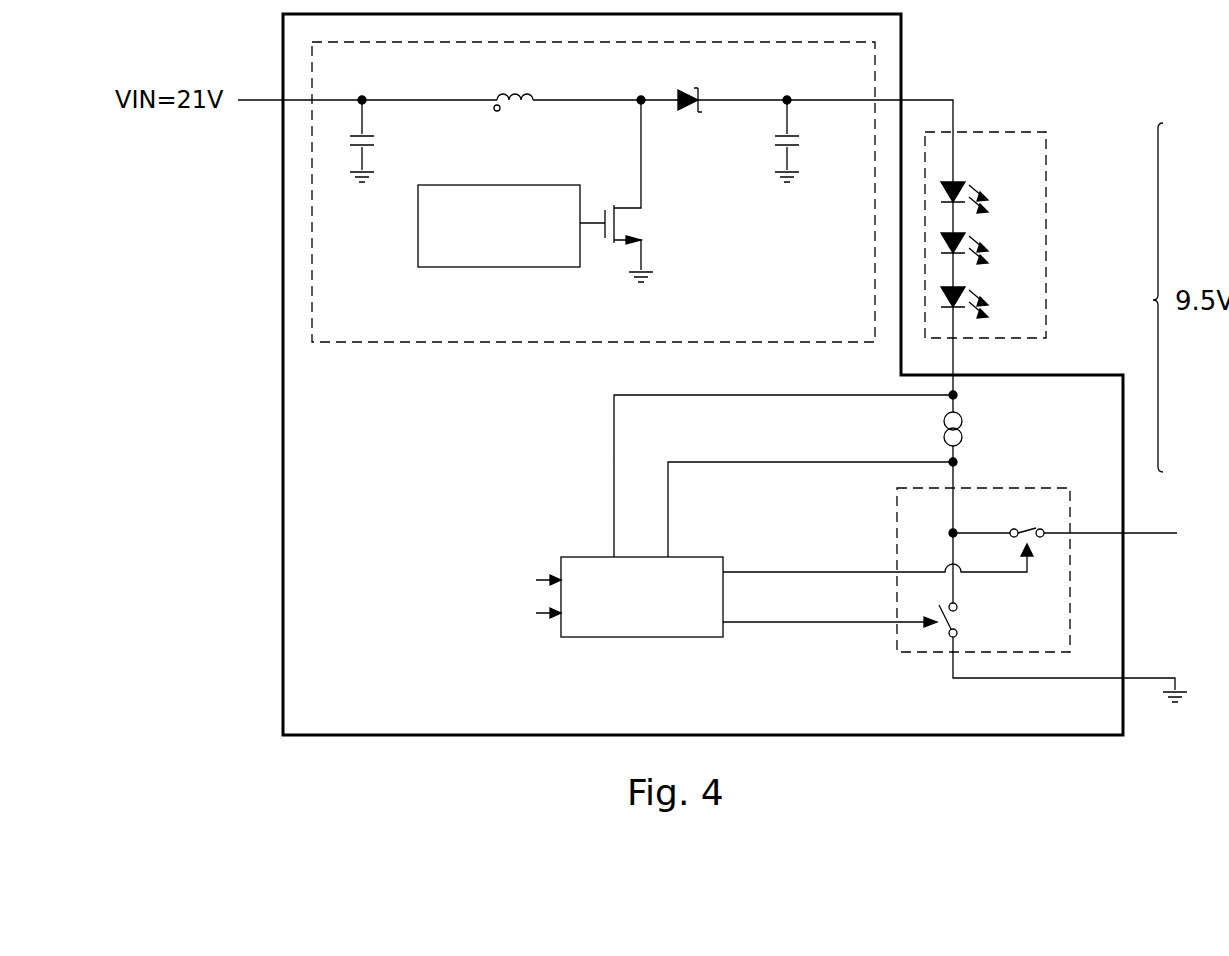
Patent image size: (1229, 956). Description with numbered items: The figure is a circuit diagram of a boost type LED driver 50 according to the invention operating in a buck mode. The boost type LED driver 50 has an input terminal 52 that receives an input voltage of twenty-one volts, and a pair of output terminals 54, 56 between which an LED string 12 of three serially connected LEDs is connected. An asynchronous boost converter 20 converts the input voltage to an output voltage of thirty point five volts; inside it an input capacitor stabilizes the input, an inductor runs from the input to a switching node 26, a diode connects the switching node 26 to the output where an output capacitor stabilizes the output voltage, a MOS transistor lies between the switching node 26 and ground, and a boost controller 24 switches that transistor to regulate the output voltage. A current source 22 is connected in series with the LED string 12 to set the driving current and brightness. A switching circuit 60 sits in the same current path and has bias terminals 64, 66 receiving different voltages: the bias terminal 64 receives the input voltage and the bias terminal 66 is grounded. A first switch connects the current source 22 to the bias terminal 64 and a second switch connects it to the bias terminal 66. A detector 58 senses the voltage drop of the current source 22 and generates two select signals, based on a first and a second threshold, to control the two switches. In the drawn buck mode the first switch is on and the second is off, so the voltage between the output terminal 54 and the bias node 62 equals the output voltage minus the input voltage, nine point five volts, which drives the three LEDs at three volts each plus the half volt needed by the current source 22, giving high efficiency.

The LED string 12 is at (985, 130).
The asynchronous boost converter 20 is at (606, 224).
The current source 22 is at (943, 430).
The boost controller 24 is at (497, 268).
The switching node 26 is at (635, 102).
The boost type LED driver 50 is at (283, 265).
The input terminal 52 is at (262, 98).
The output terminal 54 is at (918, 98).
The output terminal 56 is at (956, 358).
The detector 58 is at (582, 557).
The switching circuit 60 is at (945, 570).
The bias node 62 is at (950, 532).
The bias terminal 64 is at (1093, 531).
The bias terminal 66 is at (953, 668).